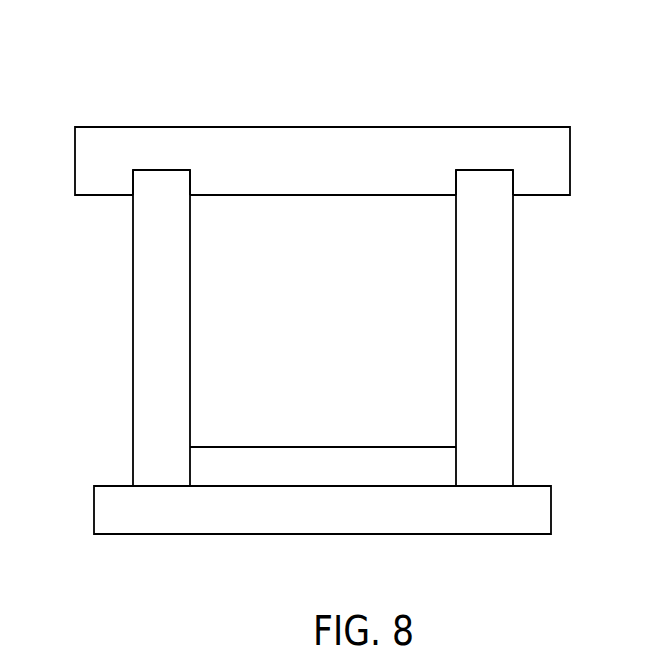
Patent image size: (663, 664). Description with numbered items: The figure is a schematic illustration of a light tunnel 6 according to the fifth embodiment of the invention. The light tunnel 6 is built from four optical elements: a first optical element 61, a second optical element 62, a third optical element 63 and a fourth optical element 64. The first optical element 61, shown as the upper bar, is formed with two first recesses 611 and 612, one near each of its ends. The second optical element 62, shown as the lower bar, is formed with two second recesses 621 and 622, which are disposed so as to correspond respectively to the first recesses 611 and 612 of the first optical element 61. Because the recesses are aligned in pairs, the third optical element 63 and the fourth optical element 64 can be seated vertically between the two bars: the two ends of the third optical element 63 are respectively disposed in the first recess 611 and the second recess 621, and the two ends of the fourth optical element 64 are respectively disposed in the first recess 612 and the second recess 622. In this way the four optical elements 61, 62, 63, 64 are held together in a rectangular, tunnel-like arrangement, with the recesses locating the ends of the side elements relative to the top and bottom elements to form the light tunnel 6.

The light tunnel 6 is at (38, 37).
The first optical element 61 is at (350, 163).
The first recess 611 is at (488, 169).
The first recess 612 is at (160, 169).
The second optical element 62 is at (332, 497).
The second recess 621 is at (487, 487).
The second recess 622 is at (160, 487).
The third optical element 63 is at (485, 342).
The fourth optical element 64 is at (158, 331).